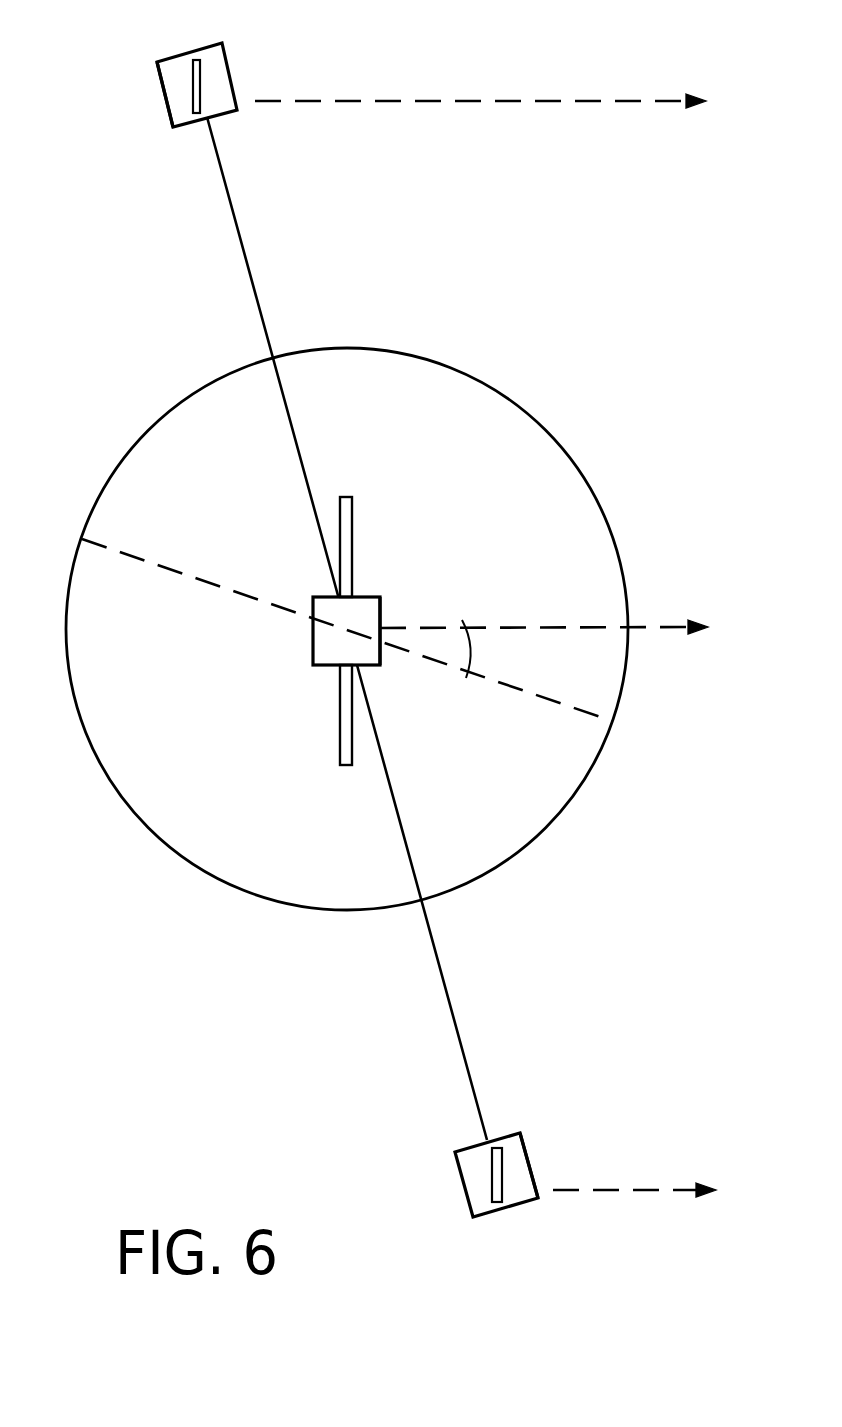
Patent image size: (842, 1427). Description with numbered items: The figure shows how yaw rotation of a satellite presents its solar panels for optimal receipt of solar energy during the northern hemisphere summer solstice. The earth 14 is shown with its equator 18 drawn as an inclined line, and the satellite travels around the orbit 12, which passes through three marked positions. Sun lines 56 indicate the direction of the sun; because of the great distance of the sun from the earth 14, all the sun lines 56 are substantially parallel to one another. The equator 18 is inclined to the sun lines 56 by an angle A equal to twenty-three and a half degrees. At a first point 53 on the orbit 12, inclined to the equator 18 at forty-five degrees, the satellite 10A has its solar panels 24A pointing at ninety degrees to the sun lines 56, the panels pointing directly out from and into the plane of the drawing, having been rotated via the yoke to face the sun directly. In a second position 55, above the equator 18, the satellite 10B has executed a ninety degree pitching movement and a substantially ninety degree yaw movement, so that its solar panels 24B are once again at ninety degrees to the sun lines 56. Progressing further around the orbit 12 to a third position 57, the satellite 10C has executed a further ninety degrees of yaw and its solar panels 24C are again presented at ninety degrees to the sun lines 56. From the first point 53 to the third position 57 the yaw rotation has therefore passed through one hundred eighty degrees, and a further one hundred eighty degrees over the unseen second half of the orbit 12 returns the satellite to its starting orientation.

The satellite 10A is at (462, 1177).
The satellite 10B is at (313, 650).
The satellite 10C is at (168, 105).
The orbit 12 is at (248, 270).
The earth 14 is at (498, 388).
The equator 18 is at (565, 708).
The solar panels 24A is at (500, 1190).
The solar panels 24B is at (352, 510).
The solar panels 24C is at (200, 72).
The first point 53 is at (538, 1198).
The second position 55 is at (380, 603).
The sun lines 56 is at (585, 100).
The third position 57 is at (155, 70).
The angle A is at (484, 649).